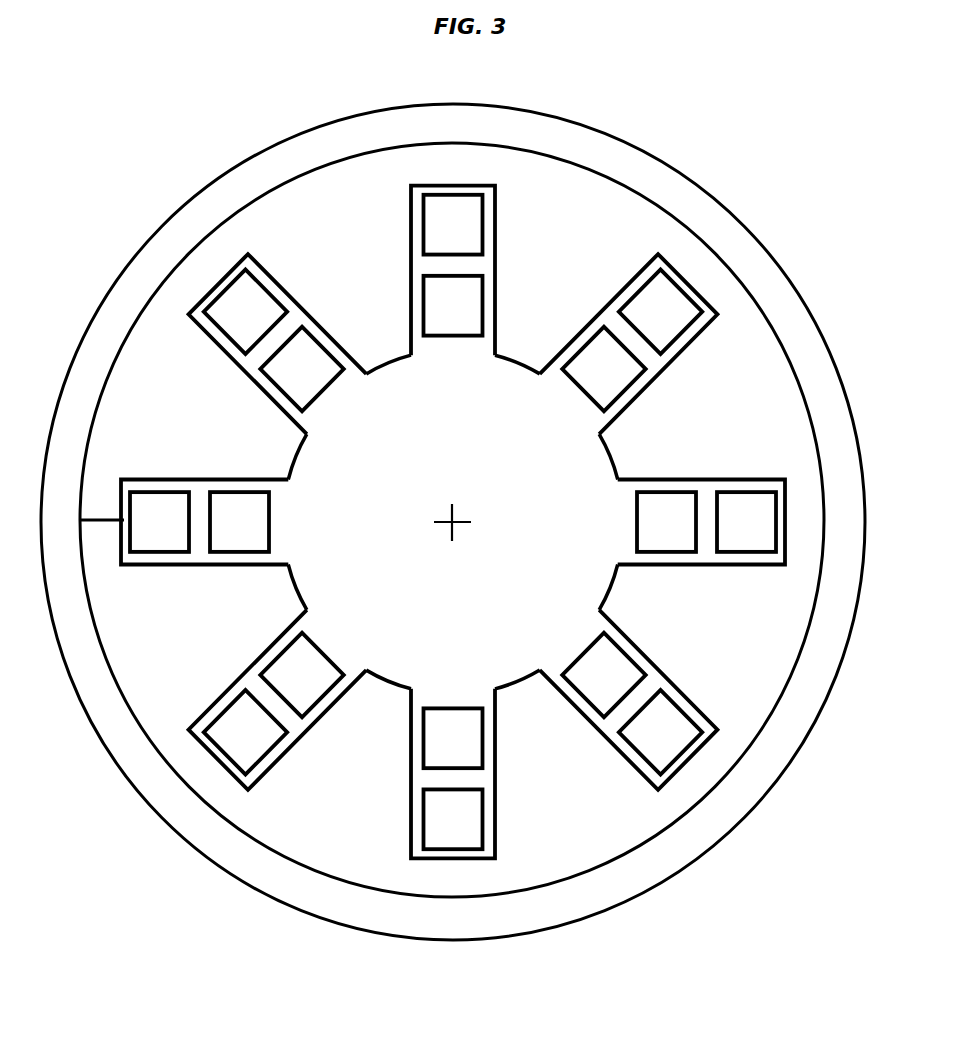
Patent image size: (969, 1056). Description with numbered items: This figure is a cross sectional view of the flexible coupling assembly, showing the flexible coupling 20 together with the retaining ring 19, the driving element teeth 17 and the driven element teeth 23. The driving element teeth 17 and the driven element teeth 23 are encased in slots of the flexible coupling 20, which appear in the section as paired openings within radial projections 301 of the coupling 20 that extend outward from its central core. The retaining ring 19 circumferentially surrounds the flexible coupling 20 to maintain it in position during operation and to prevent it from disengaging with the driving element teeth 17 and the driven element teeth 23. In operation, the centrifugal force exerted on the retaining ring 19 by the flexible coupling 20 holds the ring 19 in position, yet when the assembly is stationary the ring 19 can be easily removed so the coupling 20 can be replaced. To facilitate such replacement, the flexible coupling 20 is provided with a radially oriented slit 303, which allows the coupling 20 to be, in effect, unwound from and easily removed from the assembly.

The driving element teeth 17 is at (484, 228).
The retaining ring 19 is at (866, 505).
The flexible coupling 20 is at (374, 677).
The driven element teeth 23 is at (452, 338).
The radial arm (pole piece) 301 is at (411, 237).
The radially oriented slit 303 is at (99, 523).